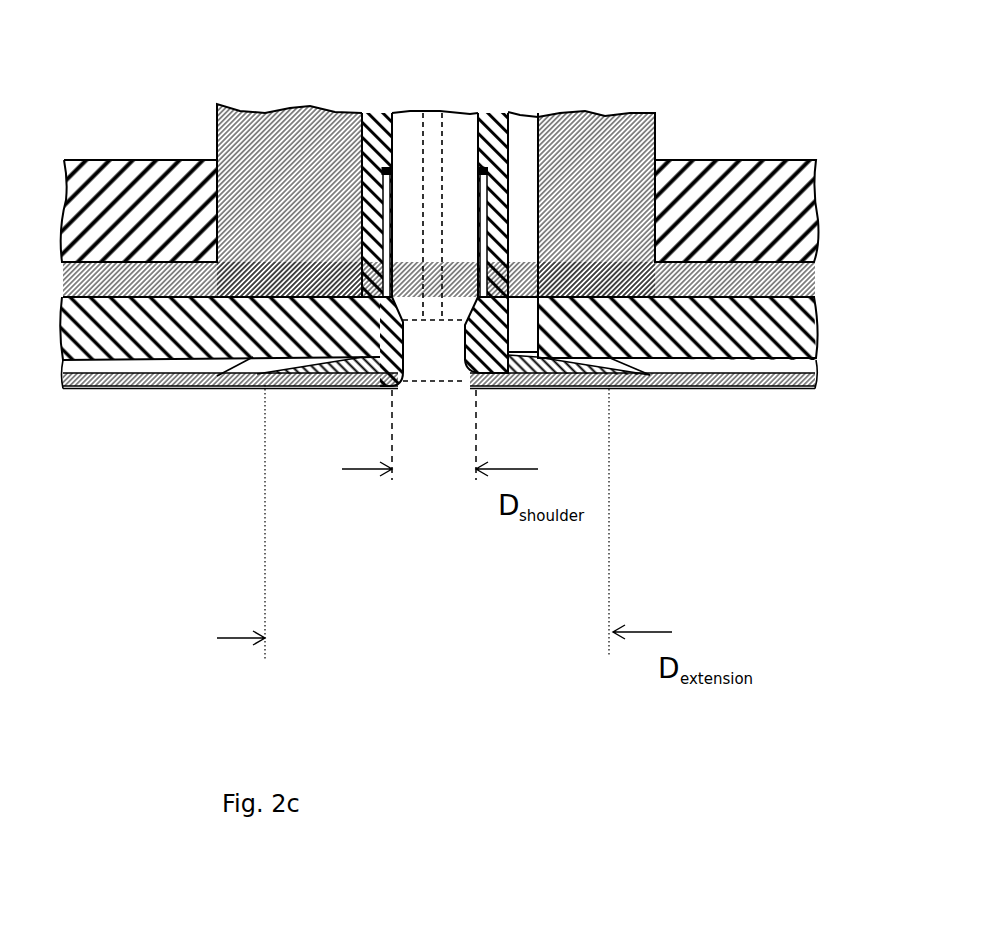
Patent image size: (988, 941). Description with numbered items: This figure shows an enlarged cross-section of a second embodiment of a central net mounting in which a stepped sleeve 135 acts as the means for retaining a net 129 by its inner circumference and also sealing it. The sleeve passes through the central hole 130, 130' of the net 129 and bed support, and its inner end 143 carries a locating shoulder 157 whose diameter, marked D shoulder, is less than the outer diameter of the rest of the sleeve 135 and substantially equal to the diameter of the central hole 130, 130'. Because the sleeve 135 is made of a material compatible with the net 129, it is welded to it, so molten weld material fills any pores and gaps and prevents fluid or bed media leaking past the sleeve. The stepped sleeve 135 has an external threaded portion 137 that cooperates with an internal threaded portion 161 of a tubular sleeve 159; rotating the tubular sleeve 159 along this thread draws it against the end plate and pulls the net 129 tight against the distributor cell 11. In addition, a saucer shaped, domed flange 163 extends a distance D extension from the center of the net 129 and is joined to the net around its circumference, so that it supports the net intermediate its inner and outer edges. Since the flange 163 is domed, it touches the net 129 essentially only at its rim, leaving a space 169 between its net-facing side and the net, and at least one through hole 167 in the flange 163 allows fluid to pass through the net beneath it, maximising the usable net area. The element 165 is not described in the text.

The distributor cell 11 is at (130, 315).
The net 129 is at (673, 387).
The central hole 130 is at (174, 192).
The central hole 130' is at (139, 211).
The stepped sleeve 135 is at (482, 200).
The external threaded portion 137 is at (488, 220).
The inner end of sleeve 143 is at (490, 340).
The locating shoulder 157 is at (383, 385).
The tubular sleeve 159 is at (485, 170).
The internal threaded portion 161 is at (385, 170).
The saucer shaped flange 163 is at (570, 387).
The left wedge 165 is at (258, 385).
The through hole 167 is at (335, 385).
The space 169 is at (537, 387).